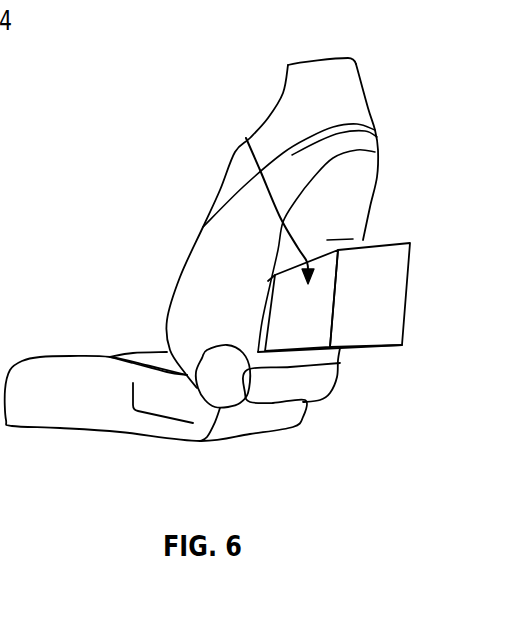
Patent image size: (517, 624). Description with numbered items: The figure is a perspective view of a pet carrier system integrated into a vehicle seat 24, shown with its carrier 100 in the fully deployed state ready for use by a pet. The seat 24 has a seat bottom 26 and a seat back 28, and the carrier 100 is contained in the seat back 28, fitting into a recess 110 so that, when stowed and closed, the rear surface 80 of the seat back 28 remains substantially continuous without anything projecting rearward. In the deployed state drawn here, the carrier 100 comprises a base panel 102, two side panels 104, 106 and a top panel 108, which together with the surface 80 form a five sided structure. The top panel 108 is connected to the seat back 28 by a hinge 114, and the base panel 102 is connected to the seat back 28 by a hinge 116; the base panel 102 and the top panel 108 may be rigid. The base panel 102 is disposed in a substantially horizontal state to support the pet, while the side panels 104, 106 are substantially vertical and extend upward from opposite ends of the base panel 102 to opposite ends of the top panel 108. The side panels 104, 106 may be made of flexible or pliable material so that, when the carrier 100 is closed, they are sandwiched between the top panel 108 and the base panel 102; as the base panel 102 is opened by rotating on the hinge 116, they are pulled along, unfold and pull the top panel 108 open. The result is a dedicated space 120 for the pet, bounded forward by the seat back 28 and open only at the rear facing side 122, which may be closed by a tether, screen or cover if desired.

The seat 24 is at (374, 37).
The seat bottom 26 is at (50, 413).
The seat back 28 is at (348, 108).
The surface 80 is at (362, 172).
The carrier 100 is at (228, 198).
The base panel 102 is at (365, 349).
The side panel 104 is at (303, 301).
The side panel 106 is at (408, 288).
The top panel 108 is at (383, 246).
The recess 110 is at (352, 290).
The hinge 114 is at (272, 287).
The hinge 116 is at (300, 352).
The space 120 is at (380, 313).
The open rear facing side 122 is at (387, 302).